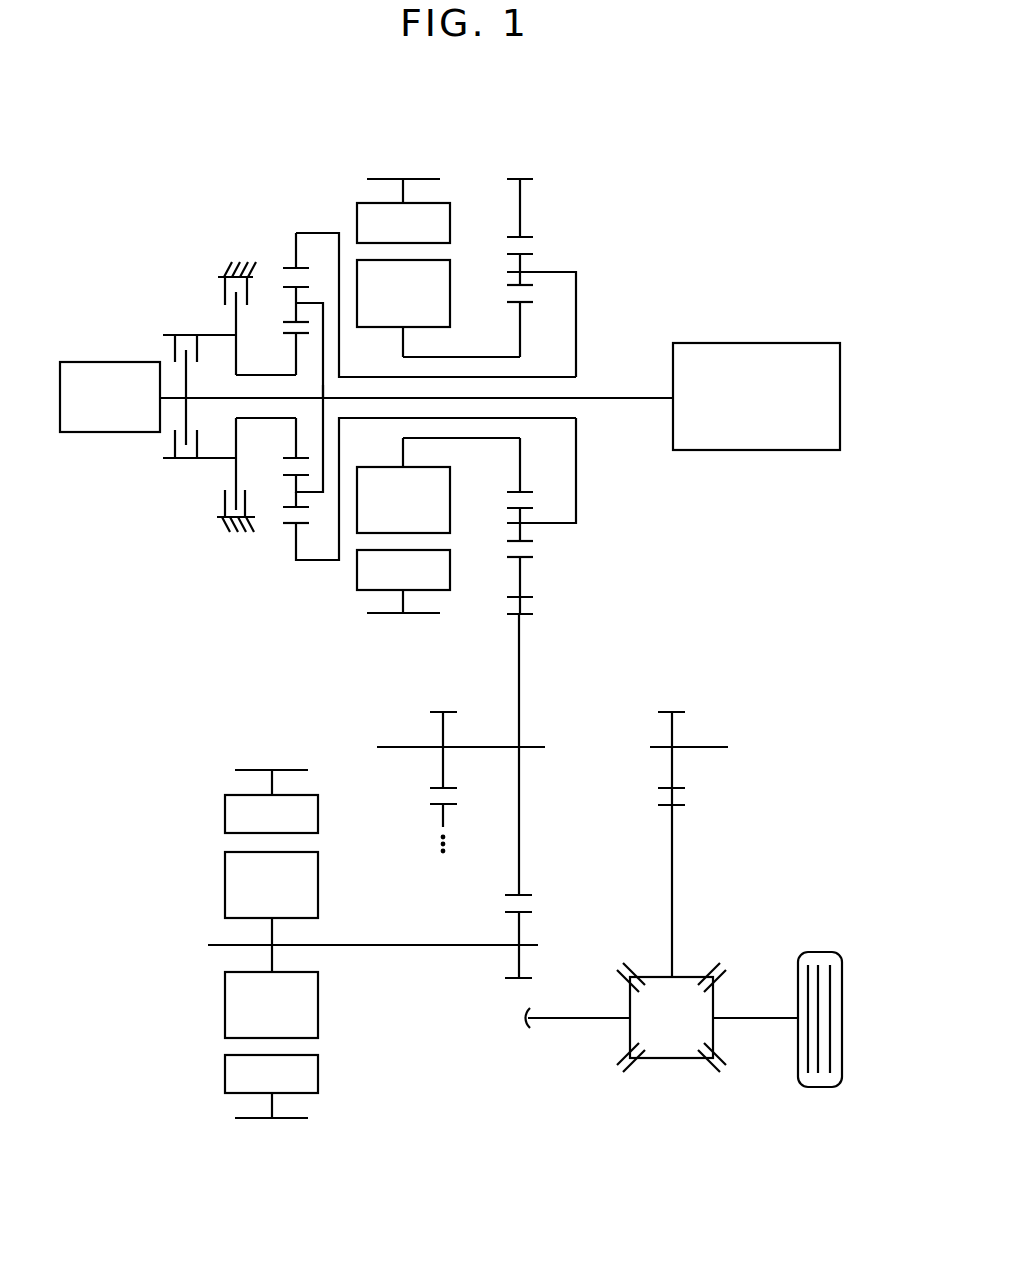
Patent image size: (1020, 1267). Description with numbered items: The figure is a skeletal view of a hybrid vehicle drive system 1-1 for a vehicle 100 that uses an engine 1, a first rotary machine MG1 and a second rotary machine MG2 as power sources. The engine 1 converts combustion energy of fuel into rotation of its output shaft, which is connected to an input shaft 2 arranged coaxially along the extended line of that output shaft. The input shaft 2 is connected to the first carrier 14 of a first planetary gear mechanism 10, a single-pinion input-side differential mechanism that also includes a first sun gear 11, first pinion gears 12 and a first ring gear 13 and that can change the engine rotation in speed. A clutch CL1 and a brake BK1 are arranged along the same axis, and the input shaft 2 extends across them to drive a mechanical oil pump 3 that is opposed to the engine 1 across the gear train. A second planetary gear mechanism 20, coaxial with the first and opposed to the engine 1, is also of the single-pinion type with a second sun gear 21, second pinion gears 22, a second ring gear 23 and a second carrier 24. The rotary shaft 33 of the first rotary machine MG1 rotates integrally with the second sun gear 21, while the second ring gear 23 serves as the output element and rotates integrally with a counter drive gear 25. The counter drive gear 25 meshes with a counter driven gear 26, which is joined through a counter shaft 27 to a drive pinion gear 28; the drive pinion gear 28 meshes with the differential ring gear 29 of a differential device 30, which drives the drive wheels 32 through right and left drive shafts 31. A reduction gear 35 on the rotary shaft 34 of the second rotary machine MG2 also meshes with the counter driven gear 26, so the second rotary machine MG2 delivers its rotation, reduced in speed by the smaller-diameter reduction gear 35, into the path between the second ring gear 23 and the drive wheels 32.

The vehicle 100 is at (162, 182).
The hybrid vehicle drive system 1-1 is at (553, 157).
The engine 1 is at (810, 342).
The input shaft 2 is at (627, 396).
The mechanical oil pump 3 is at (83, 361).
The clutch CL1 is at (167, 321).
The brake BK1 is at (213, 292).
The first planetary gear mechanism 10 is at (406, 364).
The first sun gear 11 is at (287, 333).
The first pinion gears 12 is at (287, 322).
The first ring gear 13 is at (287, 272).
The first carrier 14 is at (320, 385).
The first rotary machine MG1 is at (403, 396).
The second planetary gear mechanism 20 is at (526, 396).
The second sun gear 21 is at (530, 304).
The second pinion gears 22 is at (510, 287).
The second ring gear 23 is at (512, 240).
The second carrier 24 is at (548, 273).
The counter drive gear 25 is at (530, 606).
The counter driven gear 26 is at (504, 616).
The counter shaft 27 is at (477, 746).
The drive pinion gear 28 is at (450, 712).
The differential ring gear 29 is at (448, 803).
The differential device 30 is at (696, 957).
The drive shafts 31 is at (753, 1016).
The drive wheels 32 is at (813, 952).
The rotary shaft 33 is at (468, 356).
The rotary shaft 34 is at (360, 944).
The reduction gear 35 is at (525, 912).
The second rotary machine MG2 is at (271, 944).